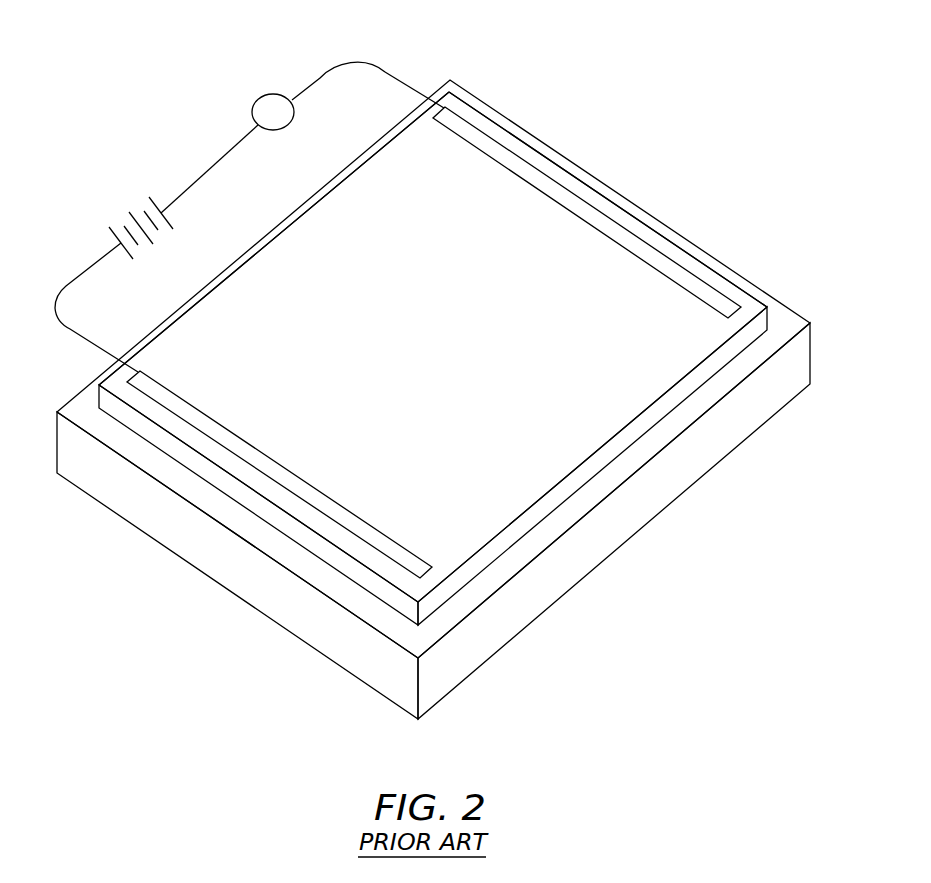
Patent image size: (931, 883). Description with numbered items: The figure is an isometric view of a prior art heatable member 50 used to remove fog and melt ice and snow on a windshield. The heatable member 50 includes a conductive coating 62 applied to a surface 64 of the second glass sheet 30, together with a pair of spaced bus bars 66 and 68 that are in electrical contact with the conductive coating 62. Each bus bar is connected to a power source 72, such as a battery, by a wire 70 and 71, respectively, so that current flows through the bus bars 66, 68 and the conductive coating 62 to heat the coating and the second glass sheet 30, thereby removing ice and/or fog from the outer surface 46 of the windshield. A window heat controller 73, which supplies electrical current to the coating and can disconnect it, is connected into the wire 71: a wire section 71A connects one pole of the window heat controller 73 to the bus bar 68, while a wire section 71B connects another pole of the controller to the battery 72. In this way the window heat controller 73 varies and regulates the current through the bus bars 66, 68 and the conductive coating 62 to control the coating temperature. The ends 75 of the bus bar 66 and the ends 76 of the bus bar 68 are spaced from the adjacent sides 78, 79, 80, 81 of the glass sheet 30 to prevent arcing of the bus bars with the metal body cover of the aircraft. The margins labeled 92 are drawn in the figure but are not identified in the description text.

The second glass sheet 30 is at (434, 399).
The outer surface 46 is at (577, 583).
The heatable member 50 is at (226, 611).
The conductive coating 62 is at (411, 343).
The surface 64 is at (433, 358).
The bus bar 66 is at (193, 413).
The bus bar 68 is at (517, 163).
The wire 70 is at (81, 341).
The wire 71 is at (308, 87).
The wire section 71A is at (392, 76).
The wire section 71B is at (210, 168).
The power source 72 is at (112, 196).
The window heat controller 73 is at (259, 100).
The ends of the bus bar 75 is at (129, 368).
The ends of the bus bar 76 is at (440, 100).
The side of the glass sheet 78 is at (687, 469).
The side of the glass sheet 79 is at (618, 193).
The side of the glass sheet 80 is at (289, 216).
The side of the glass sheet 81 is at (150, 510).
The exposed margin 92 is at (244, 262).